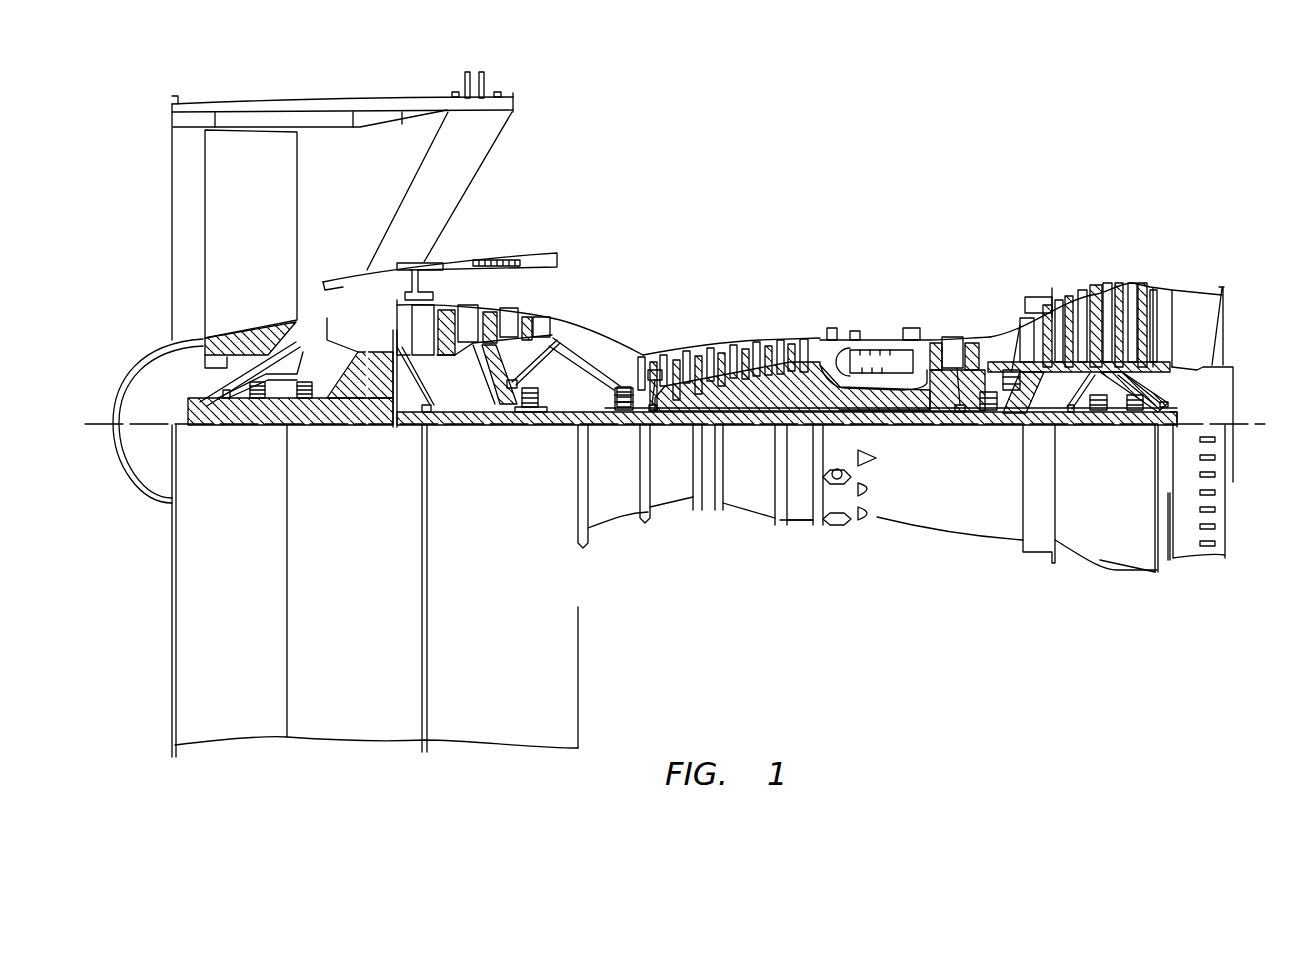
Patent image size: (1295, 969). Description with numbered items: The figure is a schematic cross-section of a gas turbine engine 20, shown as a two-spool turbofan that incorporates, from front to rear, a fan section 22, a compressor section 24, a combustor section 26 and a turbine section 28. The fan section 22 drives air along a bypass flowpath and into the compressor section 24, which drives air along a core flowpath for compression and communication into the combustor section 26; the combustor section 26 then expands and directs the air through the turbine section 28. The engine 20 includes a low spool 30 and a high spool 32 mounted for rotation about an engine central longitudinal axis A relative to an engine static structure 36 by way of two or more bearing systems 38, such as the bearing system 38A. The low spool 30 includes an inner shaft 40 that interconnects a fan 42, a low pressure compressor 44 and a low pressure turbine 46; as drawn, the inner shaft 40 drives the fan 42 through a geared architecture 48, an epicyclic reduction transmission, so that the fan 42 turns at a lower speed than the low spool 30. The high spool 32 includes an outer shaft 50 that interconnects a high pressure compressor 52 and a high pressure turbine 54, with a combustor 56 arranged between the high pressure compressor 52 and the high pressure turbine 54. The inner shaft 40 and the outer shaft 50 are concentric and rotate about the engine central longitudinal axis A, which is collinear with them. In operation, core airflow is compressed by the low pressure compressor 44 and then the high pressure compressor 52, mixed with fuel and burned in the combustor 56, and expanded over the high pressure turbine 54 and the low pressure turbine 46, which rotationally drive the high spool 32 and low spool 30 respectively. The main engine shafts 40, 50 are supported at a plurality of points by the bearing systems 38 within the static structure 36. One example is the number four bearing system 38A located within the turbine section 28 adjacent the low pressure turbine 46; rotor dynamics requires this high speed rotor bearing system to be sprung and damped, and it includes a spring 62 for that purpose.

The gas turbine engine 20 is at (993, 154).
The fan section 22 is at (420, 80).
The compressor section 24 is at (432, 215).
The combustor section 26 is at (935, 213).
The turbine section 28 is at (1163, 214).
The low spool 30 is at (753, 425).
The high spool 32 is at (787, 357).
The engine static structure 36 is at (802, 519).
The bearing systems 38 is at (453, 482).
The bearing system 38A is at (1003, 410).
The inner shaft 40 is at (603, 423).
The fan 42 is at (256, 245).
The low pressure compressor 44 is at (505, 313).
The low pressure turbine 46 is at (1093, 305).
The geared architecture 48 is at (377, 400).
The outer shaft 50 is at (898, 403).
The high pressure compressor 52 is at (735, 390).
The high pressure turbine 54 is at (952, 333).
The combustor 56 is at (878, 363).
The spring 62 is at (657, 413).
The engine central longitudinal axis A is at (1259, 428).